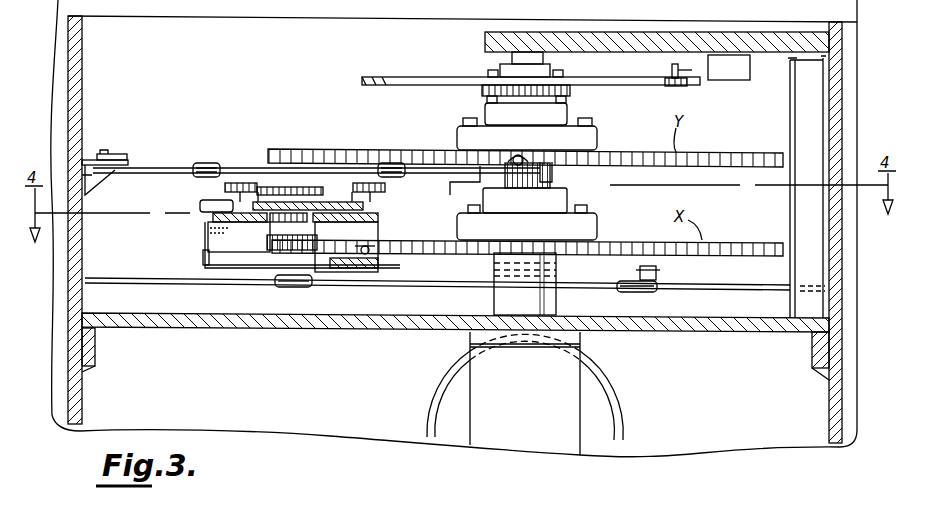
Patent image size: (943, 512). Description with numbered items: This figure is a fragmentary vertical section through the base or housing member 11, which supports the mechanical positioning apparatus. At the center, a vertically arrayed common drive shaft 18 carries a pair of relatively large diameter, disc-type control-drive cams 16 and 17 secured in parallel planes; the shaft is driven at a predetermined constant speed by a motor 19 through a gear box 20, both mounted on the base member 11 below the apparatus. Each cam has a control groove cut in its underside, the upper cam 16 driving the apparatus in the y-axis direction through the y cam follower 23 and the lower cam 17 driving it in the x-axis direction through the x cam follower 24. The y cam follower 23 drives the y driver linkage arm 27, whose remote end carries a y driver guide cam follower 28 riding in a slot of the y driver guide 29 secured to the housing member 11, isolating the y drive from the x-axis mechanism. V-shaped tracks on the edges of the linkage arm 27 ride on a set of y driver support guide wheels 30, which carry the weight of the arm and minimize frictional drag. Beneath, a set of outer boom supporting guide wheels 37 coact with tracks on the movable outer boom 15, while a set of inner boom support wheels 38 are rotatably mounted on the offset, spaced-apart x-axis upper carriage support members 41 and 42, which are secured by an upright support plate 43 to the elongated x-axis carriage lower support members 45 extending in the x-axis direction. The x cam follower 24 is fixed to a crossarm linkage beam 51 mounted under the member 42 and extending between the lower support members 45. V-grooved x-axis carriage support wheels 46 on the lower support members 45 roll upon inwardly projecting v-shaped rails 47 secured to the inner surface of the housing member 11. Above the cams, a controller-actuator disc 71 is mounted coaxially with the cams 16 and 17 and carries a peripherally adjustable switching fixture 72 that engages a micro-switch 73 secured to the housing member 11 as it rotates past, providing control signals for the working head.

The base or housing member 11 is at (73, 70).
The outer boom 15 is at (239, 237).
The disc-type control-drive cam 16 is at (330, 151).
The disc-type control-drive cam 17 is at (748, 241).
The common drive shaft 18 is at (512, 58).
The motor 19 is at (612, 408).
The gear box 20 is at (470, 397).
The y cam follower 23 is at (518, 156).
The x cam follower 24 is at (370, 254).
The y driver linkage arm 27 is at (162, 166).
The y driver guide cam follower 28 is at (103, 152).
The y driver guide 29 is at (121, 158).
The y driver support guide wheels 30 is at (207, 163).
The outer boom supporting guide wheels 37 is at (225, 188).
The inner boom support wheels 38 is at (385, 209).
The x-axis upper carriage support member 41 is at (205, 216).
The x-axis upper carriage support member 42 is at (363, 212).
The upright support plate 43 is at (208, 240).
The x-axis carriage lower support members 45 is at (207, 258).
The x-axis carriage support wheels 46 is at (280, 287).
The v-shaped rails 47 is at (113, 282).
The crossarm linkage beam 51 is at (335, 268).
The controller-actuator disc 71 is at (362, 77).
The switching fixture 72 is at (672, 70).
The micro-switch 73 is at (732, 72).